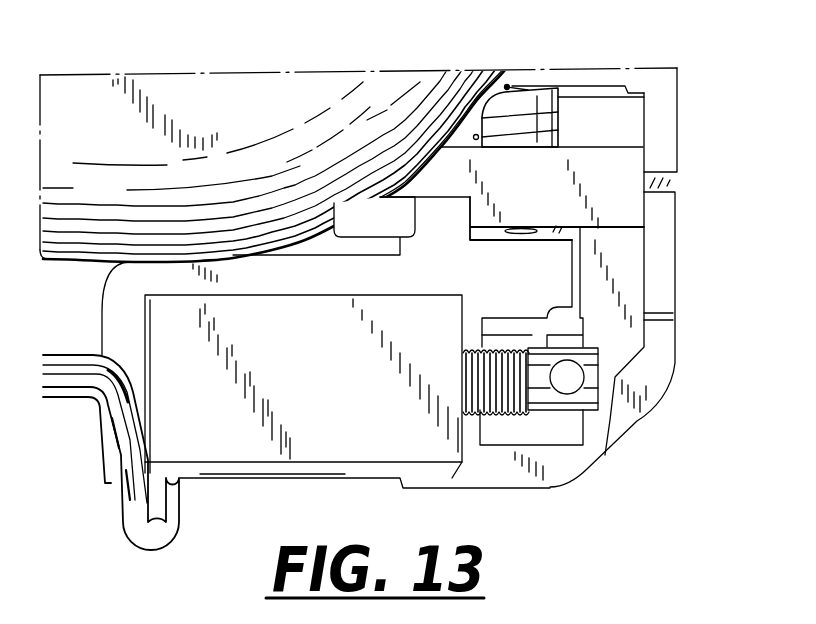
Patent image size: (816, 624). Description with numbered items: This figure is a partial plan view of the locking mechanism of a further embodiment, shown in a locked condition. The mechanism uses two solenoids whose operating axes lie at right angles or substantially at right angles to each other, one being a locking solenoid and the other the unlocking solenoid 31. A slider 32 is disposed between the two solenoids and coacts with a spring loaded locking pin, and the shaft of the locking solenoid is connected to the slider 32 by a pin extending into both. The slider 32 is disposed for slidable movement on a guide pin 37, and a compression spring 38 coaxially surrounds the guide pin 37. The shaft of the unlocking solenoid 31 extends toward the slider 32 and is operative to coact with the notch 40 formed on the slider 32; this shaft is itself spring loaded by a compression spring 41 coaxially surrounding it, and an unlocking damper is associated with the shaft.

The unlocking solenoid 31 is at (238, 443).
The slider 32 is at (632, 267).
The guide pin 37 is at (543, 110).
The compression spring 38 is at (527, 88).
The notch 40 is at (600, 390).
The compression spring 41 is at (512, 392).